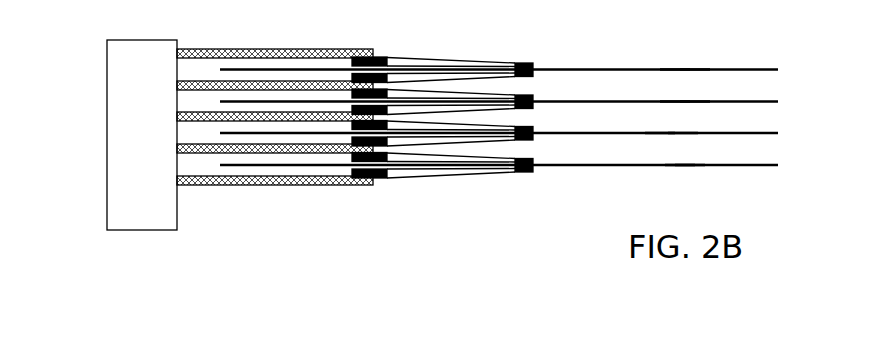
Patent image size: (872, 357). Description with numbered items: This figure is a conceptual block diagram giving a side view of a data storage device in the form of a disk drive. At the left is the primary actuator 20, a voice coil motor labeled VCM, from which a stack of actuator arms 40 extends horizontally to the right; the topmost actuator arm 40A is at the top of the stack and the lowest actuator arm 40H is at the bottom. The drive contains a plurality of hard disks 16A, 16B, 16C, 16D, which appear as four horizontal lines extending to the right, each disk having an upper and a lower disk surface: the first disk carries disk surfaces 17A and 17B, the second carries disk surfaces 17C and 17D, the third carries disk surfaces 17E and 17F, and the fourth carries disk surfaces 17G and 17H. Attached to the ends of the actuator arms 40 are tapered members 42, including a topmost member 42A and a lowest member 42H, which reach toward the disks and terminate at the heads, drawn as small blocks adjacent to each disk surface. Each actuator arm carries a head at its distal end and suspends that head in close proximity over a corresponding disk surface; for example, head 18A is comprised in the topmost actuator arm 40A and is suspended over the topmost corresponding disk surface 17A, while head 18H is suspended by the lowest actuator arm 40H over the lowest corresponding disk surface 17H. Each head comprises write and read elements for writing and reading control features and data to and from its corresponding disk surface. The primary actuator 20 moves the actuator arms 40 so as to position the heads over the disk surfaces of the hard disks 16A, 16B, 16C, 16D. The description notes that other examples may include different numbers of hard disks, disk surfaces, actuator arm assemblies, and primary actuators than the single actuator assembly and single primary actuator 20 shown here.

The primary actuator 20 is at (107, 76).
The actuator arms 40 is at (286, 205).
The topmost actuator arm 40A is at (292, 49).
The lowest actuator arm 40H is at (243, 185).
The suspensions 42 is at (432, 196).
The top suspension 42A is at (472, 46).
The bottom suspension 42H is at (474, 186).
The head 18A is at (541, 56).
The head 18H is at (542, 180).
The hard disk 16A is at (792, 70).
The hard disk 16B is at (792, 102).
The hard disk 16C is at (792, 133).
The hard disk 16D is at (792, 165).
The disk surface 17A is at (692, 70).
The disk surface 17B is at (675, 70).
The disk surface 17C is at (692, 102).
The disk surface 17D is at (675, 102).
The disk surface 17E is at (680, 133).
The disk surface 17F is at (660, 133).
The disk surface 17G is at (678, 165).
The disk surface 17H is at (690, 165).